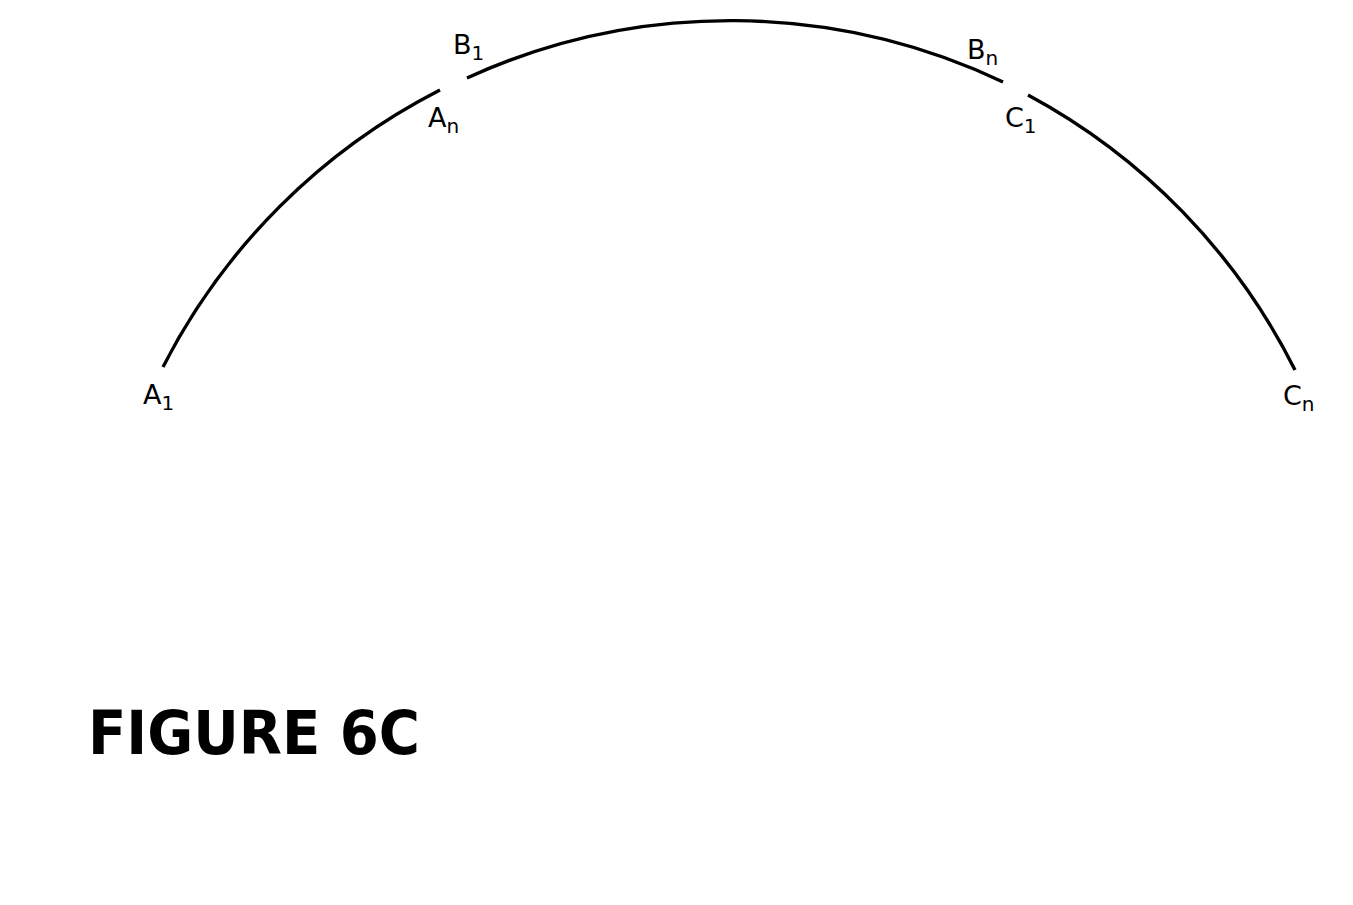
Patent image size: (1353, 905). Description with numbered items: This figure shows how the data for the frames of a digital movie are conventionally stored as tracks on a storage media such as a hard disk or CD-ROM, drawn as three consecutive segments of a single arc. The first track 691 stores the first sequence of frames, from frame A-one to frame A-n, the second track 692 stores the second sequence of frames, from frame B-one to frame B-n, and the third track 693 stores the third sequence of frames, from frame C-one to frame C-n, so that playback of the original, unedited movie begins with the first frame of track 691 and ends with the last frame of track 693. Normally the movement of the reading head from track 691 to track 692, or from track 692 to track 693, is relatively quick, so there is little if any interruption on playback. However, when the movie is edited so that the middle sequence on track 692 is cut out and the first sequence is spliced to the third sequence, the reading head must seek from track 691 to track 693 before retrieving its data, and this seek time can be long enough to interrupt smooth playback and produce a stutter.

The track 691 is at (298, 218).
The track 692 is at (703, 27).
The track 693 is at (1167, 233).